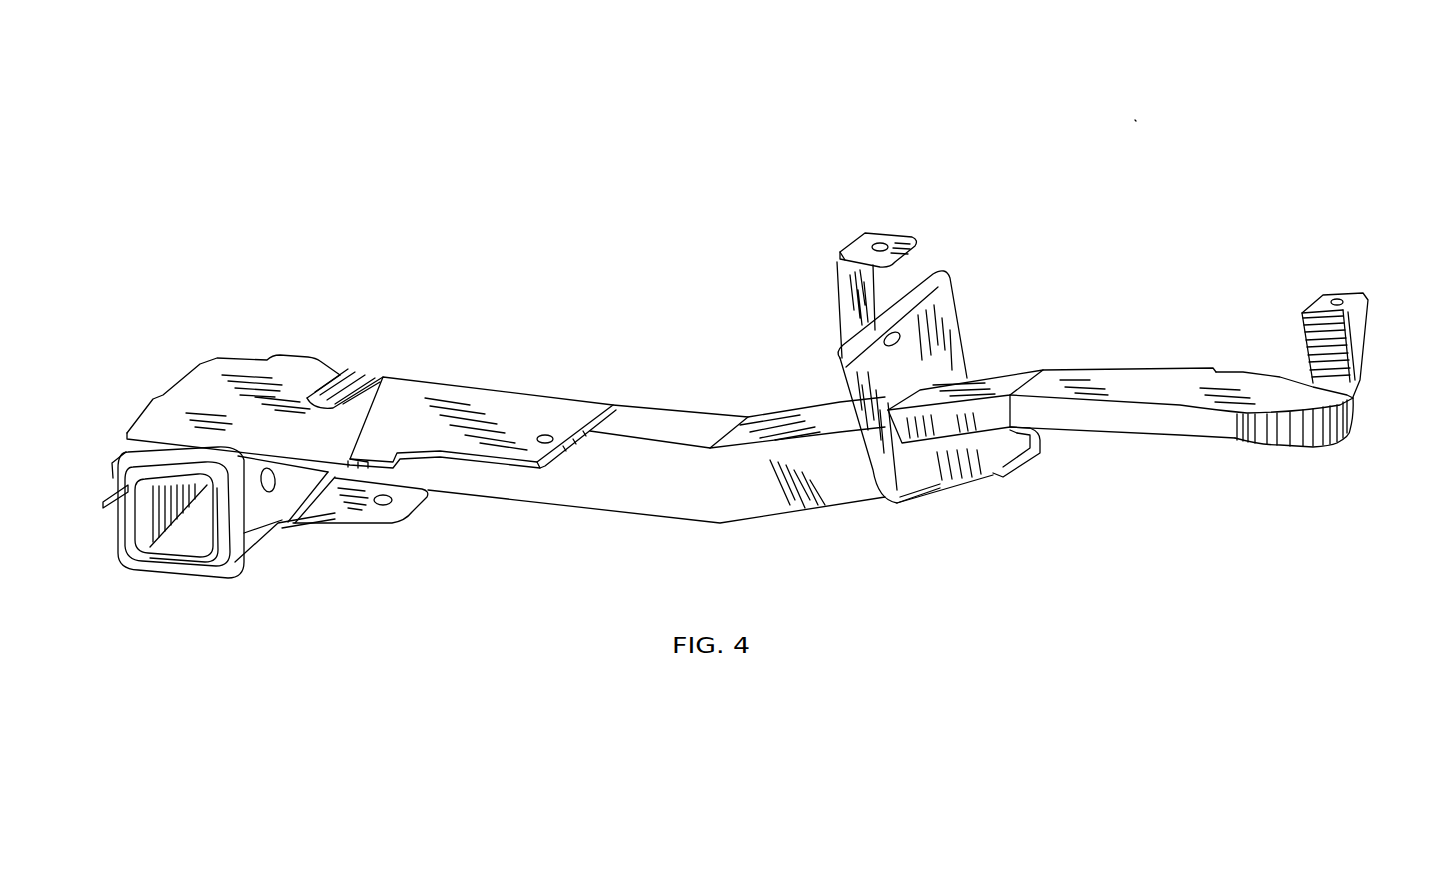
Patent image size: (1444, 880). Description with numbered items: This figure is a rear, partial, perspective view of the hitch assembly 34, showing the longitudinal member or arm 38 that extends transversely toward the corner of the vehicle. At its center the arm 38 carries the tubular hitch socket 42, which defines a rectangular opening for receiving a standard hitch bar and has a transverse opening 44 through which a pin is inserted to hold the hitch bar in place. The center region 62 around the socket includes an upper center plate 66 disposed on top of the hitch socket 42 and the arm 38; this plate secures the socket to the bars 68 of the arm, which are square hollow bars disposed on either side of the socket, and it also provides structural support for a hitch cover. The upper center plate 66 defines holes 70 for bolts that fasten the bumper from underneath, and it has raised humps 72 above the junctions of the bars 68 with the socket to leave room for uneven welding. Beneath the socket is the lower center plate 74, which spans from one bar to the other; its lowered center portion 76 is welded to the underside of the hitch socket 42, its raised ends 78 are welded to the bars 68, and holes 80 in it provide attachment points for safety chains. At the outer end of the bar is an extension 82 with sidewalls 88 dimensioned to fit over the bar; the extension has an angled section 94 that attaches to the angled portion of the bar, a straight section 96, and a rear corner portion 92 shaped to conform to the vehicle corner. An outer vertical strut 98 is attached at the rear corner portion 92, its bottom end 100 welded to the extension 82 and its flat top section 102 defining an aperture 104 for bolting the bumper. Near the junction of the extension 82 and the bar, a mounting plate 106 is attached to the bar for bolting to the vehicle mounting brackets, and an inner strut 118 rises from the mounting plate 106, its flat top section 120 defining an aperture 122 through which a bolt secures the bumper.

The hitch assembly 34 is at (1140, 106).
The longitudinal member or arm 38 is at (667, 543).
The tubular hitch socket 42 is at (176, 455).
The transverse opening 44 is at (272, 493).
The center region 62 is at (409, 224).
The upper center plate 66 is at (503, 396).
The bars 68 is at (665, 420).
The holes 70 is at (548, 432).
The raised humps 72 is at (348, 382).
The lower center plate 74 is at (434, 512).
The lowered center portion 76 is at (273, 530).
The raised ends 78 is at (360, 524).
The holes 80 is at (395, 498).
The extension 82 is at (1145, 360).
The sidewalls 88 is at (1155, 422).
The rear corner portion 92 is at (1273, 373).
The angled section 94 is at (1000, 440).
The straight section 96 is at (1217, 425).
The outer vertical strut 98 is at (1370, 330).
The bottom end 100 is at (1362, 388).
The flat top section 102 is at (1322, 305).
The aperture 104 is at (1337, 298).
The mounting plate 106 is at (950, 305).
The inner strut 118 is at (818, 282).
The flat top section 120 is at (860, 242).
The aperture 122 is at (882, 243).